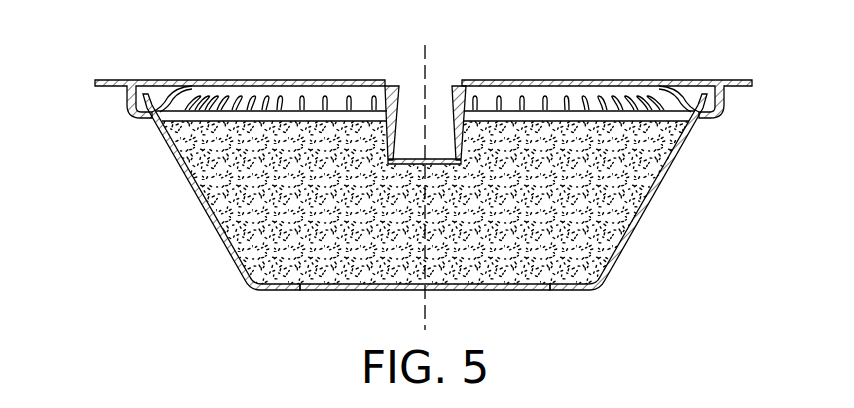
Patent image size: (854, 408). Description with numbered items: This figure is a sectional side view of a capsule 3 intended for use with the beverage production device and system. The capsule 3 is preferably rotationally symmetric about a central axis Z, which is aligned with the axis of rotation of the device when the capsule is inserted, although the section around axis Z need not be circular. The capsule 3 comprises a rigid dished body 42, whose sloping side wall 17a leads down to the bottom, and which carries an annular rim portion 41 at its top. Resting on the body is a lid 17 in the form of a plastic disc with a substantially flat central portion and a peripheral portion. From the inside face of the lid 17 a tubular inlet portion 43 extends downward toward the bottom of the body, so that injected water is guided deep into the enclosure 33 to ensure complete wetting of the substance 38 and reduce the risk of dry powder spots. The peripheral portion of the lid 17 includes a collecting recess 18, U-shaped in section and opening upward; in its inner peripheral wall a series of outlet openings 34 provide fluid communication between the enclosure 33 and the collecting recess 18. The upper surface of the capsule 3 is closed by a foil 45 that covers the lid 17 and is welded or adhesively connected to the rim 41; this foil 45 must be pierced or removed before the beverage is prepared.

The capsule 3 is at (461, 155).
The lid 17 is at (393, 72).
The side wall of capsule body 17a is at (193, 198).
The collecting recess 18 is at (683, 100).
The enclosure 33 is at (375, 270).
The outlet openings 34 is at (283, 104).
The substance 38 is at (257, 215).
The annular rim portion 41 is at (93, 81).
The rigid dished body 42 is at (651, 224).
The tubular inlet portion 43 is at (458, 157).
The foil 45 is at (164, 80).
The central axis Z is at (425, 52).